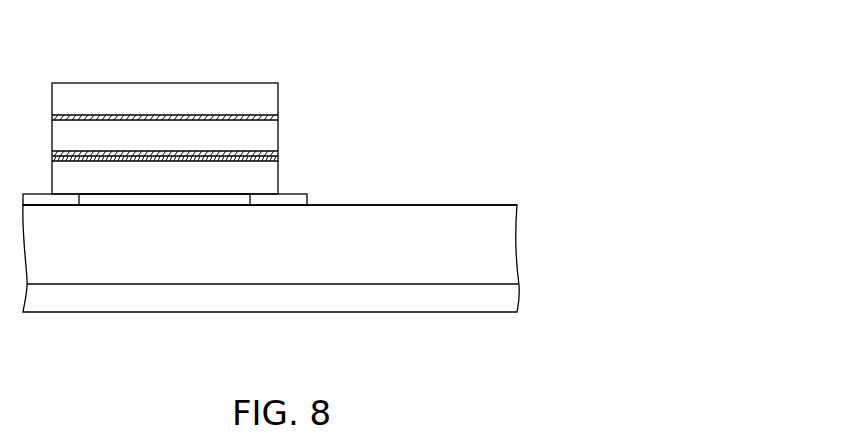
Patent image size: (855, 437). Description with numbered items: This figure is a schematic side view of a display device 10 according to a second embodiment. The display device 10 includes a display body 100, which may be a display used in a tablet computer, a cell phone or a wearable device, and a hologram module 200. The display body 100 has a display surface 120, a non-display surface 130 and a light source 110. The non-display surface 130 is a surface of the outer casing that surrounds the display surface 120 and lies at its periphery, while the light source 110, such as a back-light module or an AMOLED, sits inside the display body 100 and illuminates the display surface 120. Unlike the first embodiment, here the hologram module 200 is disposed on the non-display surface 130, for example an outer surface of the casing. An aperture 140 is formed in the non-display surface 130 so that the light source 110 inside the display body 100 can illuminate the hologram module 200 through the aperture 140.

The display device 10 is at (488, 53).
The display body 100 is at (530, 264).
The light source 110 is at (124, 297).
The display surface 120 is at (472, 203).
The non-display surface 130 is at (297, 190).
The aperture 140 is at (172, 199).
The hologram module 200 is at (132, 78).